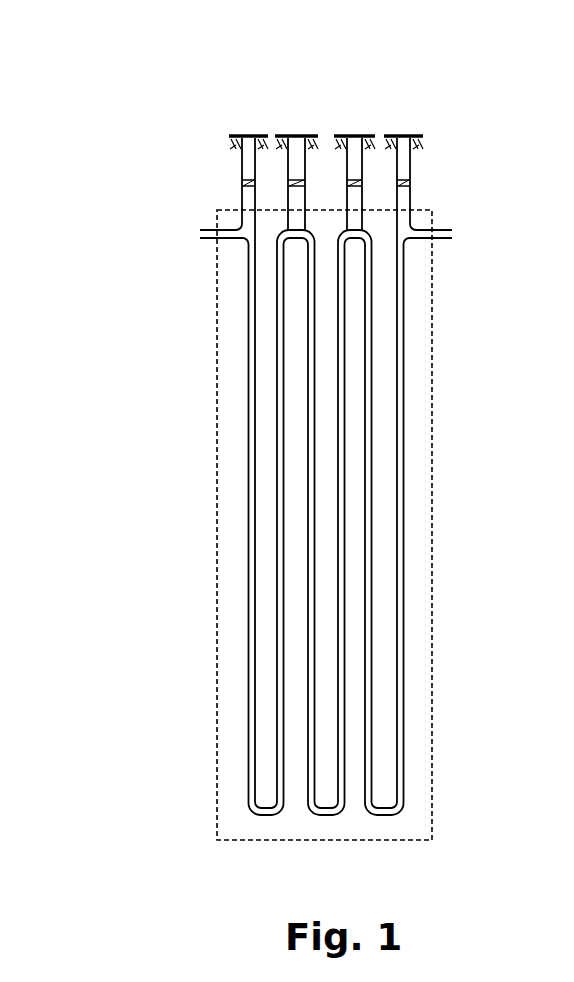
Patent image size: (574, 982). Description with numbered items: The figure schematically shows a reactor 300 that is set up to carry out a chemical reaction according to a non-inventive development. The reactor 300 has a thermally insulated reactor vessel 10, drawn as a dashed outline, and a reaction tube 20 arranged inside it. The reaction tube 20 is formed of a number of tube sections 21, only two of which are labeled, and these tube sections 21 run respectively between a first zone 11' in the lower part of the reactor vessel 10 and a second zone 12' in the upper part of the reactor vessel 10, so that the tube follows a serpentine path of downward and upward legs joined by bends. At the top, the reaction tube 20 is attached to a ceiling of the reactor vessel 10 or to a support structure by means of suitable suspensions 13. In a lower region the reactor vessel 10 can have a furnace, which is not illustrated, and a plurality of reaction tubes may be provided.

The reactor 300 is at (170, 70).
The reactor vessel 10 is at (217, 594).
The reaction tube 20 is at (326, 515).
The tube sections 21 is at (276, 332).
The suspensions 13 is at (410, 168).
The second zone 12' is at (360, 254).
The first zone 11' is at (384, 786).